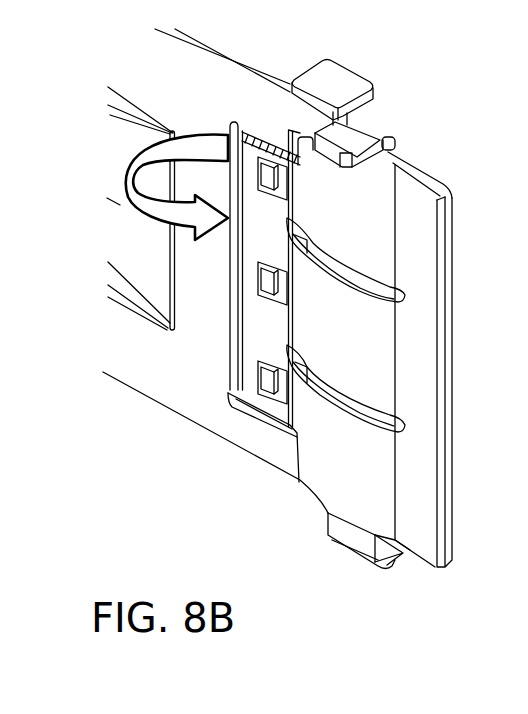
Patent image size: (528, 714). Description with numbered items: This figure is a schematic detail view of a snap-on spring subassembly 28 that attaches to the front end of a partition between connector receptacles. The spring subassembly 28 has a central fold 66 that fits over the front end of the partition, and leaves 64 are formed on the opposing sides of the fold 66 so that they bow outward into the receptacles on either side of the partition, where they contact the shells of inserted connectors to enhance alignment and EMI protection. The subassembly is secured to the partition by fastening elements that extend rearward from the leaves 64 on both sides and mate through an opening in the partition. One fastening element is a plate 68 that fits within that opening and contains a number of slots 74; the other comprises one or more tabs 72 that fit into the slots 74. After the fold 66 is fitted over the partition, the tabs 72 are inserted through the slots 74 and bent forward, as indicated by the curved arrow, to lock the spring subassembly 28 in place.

The spring subassembly 28 is at (306, 484).
The leaves 64 is at (387, 268).
The central fold 66 is at (452, 201).
The plate 68 is at (268, 347).
The tabs 72 is at (275, 180).
The slots 74 is at (262, 388).